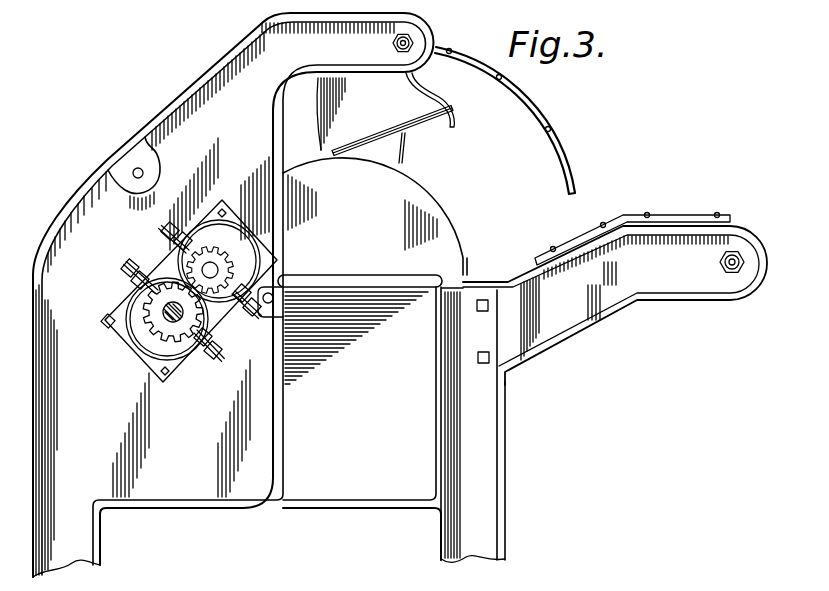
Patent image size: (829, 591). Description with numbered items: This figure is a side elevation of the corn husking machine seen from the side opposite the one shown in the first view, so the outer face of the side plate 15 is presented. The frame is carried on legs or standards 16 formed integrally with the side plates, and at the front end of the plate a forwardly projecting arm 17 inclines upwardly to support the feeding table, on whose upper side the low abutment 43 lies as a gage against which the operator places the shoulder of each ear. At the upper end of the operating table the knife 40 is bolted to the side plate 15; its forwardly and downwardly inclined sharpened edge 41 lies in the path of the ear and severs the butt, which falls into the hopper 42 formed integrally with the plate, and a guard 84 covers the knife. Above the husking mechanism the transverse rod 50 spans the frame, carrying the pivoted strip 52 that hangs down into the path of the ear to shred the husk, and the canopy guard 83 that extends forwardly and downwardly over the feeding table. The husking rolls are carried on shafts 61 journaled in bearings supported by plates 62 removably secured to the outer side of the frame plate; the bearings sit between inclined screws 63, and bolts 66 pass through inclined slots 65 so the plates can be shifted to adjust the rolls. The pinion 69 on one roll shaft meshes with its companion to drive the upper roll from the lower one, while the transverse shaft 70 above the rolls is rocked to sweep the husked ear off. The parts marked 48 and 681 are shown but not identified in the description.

The side plate 15 is at (359, 393).
The legs or standards 16 is at (93, 570).
The forwardly projecting arms 17 is at (600, 310).
The knife 40 is at (375, 176).
The sharpened edge 41 is at (424, 128).
The hopper 42 is at (360, 329).
The low abutment 43 is at (706, 218).
The bolt 48 is at (707, 257).
The transverse rod 50 is at (412, 37).
The strip 52 is at (403, 163).
The shaft 61 is at (176, 322).
The plates 62 is at (216, 200).
The inclined screws 63 is at (162, 231).
The inclined slots 65 is at (170, 253).
The bolts 66 is at (120, 322).
The bearing 681 is at (140, 317).
The pinion 69 is at (226, 256).
The transverse shaft 70 is at (133, 172).
The guard 83 is at (565, 150).
The guard 84 is at (453, 110).